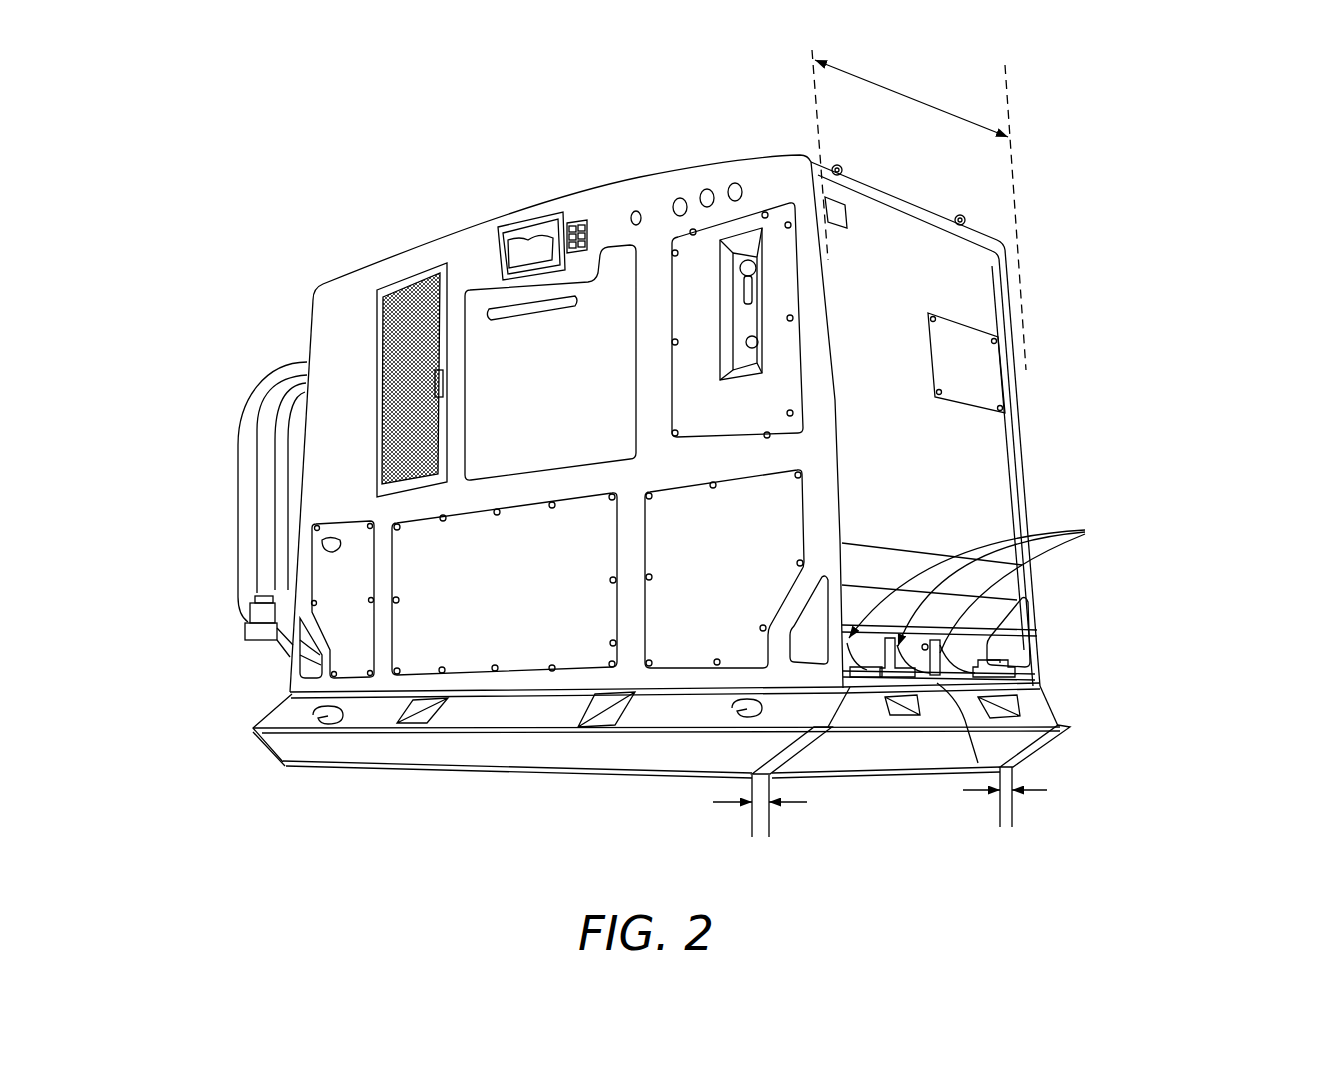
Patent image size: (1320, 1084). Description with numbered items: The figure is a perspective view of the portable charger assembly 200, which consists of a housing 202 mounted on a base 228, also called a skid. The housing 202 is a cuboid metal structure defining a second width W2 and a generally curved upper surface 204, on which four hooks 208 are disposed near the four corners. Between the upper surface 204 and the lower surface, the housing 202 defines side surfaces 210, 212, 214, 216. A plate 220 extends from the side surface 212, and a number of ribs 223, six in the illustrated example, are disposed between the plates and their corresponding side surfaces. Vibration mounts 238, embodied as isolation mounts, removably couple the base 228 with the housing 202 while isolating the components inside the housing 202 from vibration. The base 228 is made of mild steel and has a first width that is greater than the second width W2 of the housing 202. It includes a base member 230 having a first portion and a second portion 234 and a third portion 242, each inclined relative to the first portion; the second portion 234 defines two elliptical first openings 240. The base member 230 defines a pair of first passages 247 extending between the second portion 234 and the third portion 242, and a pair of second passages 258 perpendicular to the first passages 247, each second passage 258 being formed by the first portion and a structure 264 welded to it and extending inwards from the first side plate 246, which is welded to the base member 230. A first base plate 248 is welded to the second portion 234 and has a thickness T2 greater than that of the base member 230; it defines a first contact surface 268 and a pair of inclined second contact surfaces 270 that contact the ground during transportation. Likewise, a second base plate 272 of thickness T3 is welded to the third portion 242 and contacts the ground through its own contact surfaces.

The portable charger assembly 200 is at (1165, 242).
The housing 202 is at (1035, 228).
The upper surface 204 is at (365, 266).
The hooks 208 is at (840, 162).
The side surface 210 is at (308, 323).
The side surface 212 is at (947, 453).
The side surface 214 is at (714, 462).
The side surface 216 is at (1022, 372).
The plate 220 is at (1017, 728).
The ribs 223 is at (984, 596).
The base 228 is at (1070, 712).
The base member 230 is at (243, 712).
The second portion 234 is at (287, 698).
The vibration mounts 238 is at (866, 682).
The first openings 240 is at (329, 716).
The third portion 242 is at (1070, 724).
The first side plate 246 is at (1035, 699).
The first passages 247 is at (637, 694).
The first base plate 248 is at (593, 777).
The second passages 258 is at (921, 720).
The structures 264 is at (906, 703).
The first contact surface 268 is at (525, 772).
The second contact surfaces 270 is at (260, 747).
The second base plate 272 is at (1030, 768).
The second width W2 is at (911, 98).
The thickness T2 is at (760, 811).
The thickness T3 is at (1005, 797).